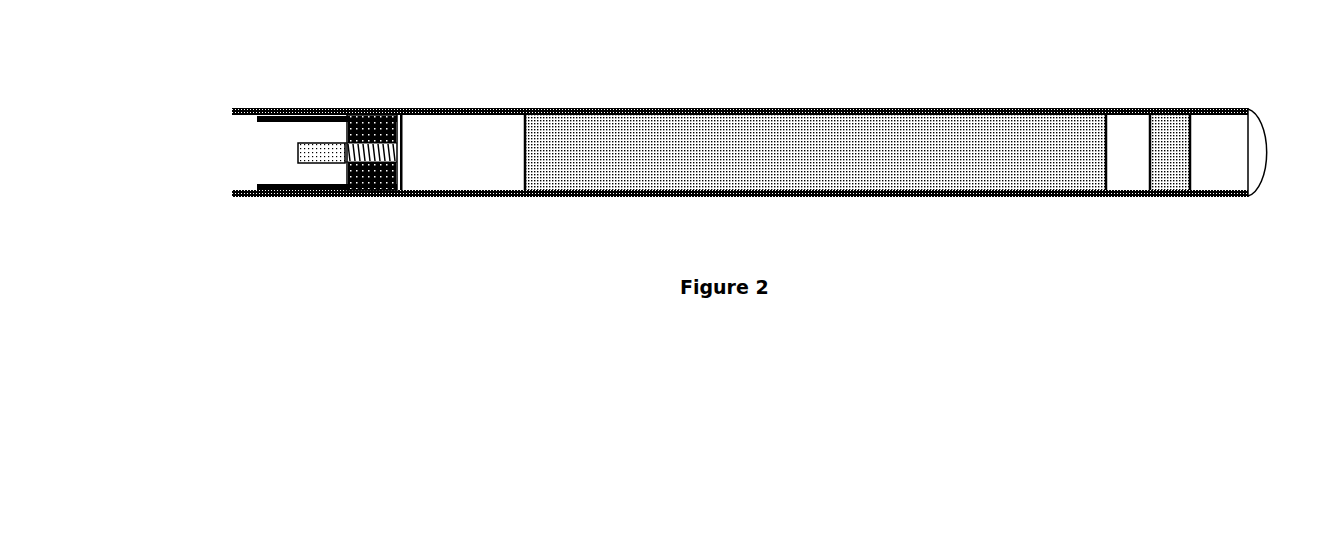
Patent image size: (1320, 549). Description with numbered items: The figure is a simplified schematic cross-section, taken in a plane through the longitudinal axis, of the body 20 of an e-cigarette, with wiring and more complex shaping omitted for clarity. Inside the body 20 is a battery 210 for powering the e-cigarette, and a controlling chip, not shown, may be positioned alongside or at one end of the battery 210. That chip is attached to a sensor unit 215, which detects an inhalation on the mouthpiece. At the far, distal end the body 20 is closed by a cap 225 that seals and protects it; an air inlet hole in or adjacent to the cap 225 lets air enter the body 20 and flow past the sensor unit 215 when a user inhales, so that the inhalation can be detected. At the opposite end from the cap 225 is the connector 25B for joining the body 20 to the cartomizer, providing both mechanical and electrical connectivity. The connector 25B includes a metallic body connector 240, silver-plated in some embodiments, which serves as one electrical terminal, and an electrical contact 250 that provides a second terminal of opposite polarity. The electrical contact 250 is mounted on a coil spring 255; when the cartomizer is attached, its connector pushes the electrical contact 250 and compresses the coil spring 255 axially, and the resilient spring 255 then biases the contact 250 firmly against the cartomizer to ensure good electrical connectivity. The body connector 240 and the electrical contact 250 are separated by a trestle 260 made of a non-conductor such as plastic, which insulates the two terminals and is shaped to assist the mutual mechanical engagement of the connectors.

The body 20 is at (850, 212).
The connector 25B is at (317, 108).
The battery 210 is at (817, 153).
The sensor unit 215 is at (1172, 152).
The cap 225 is at (1255, 152).
The body connector 240 is at (243, 196).
The electrical contact 250 is at (320, 152).
The coil spring 255 is at (361, 185).
The trestle 260 is at (373, 117).